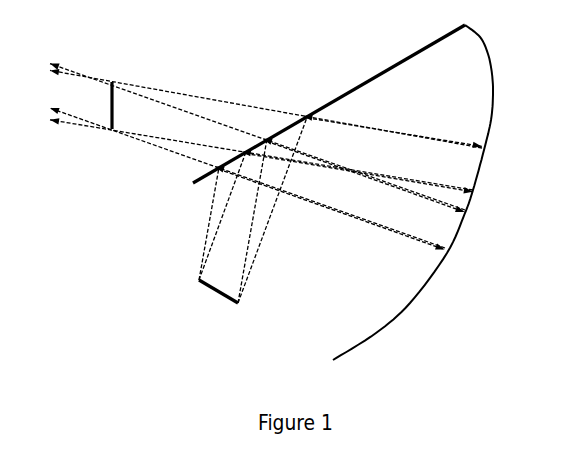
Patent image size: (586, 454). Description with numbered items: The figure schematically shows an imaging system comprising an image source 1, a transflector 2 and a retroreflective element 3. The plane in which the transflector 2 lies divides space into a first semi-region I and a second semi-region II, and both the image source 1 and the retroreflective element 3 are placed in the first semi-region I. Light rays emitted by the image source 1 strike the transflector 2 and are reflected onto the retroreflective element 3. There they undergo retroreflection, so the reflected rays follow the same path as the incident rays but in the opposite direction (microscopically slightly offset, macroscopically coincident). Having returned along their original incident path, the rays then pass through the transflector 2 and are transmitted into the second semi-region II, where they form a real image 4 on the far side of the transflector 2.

The image source 1 is at (218, 304).
The transflector 2 is at (329, 104).
The retroreflective element 3 is at (413, 192).
The real image 4 is at (104, 122).
The first semi-region I is at (510, 239).
The second semi-region II is at (295, 28).